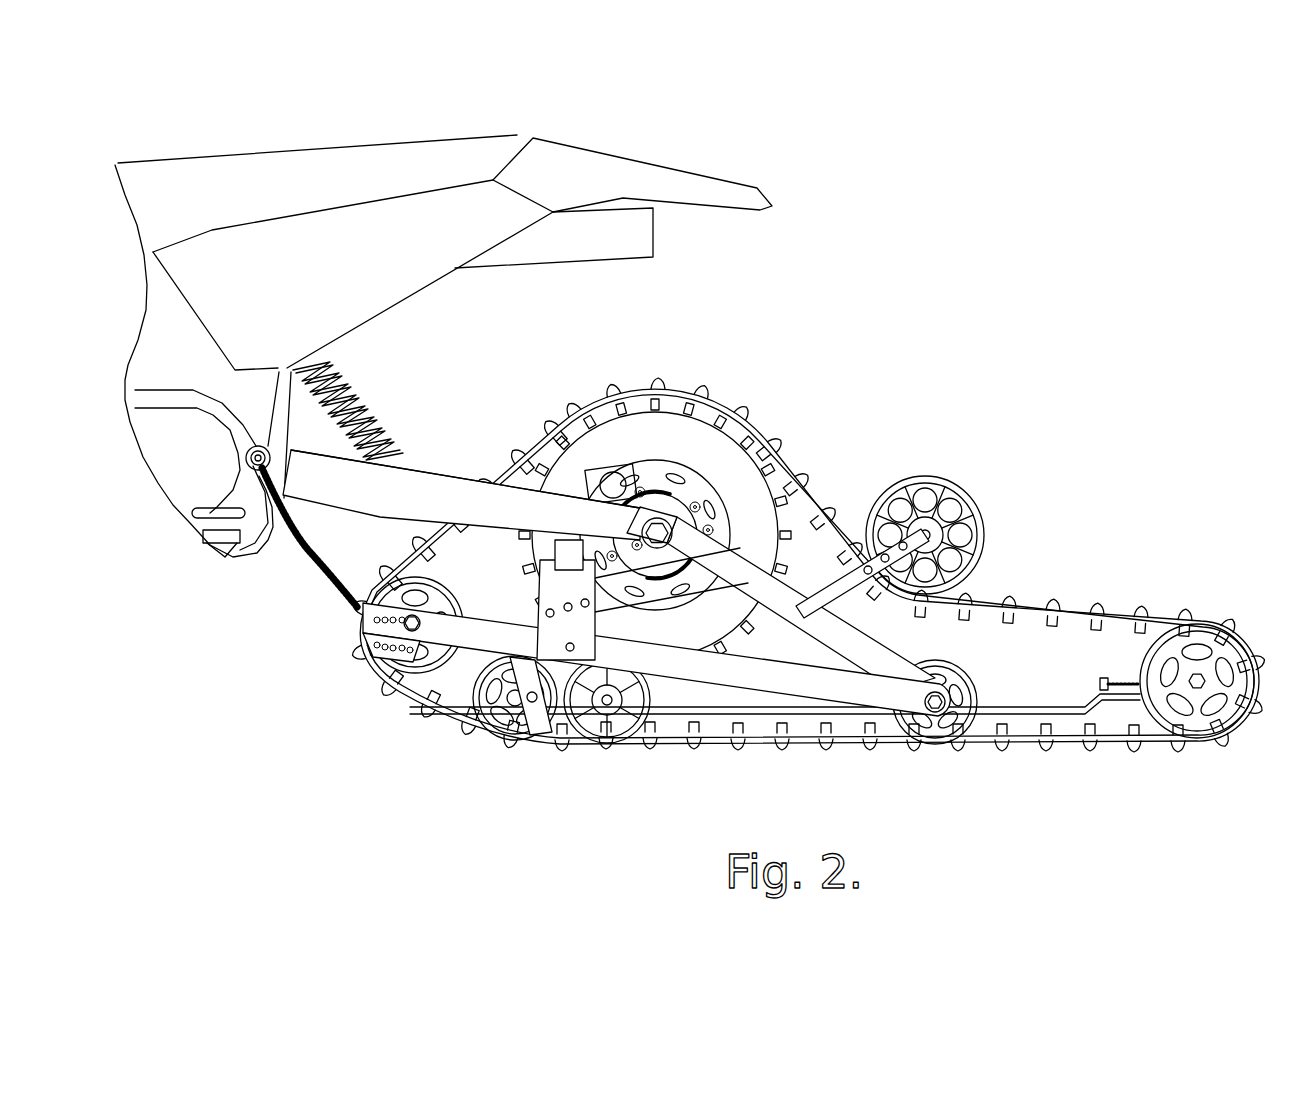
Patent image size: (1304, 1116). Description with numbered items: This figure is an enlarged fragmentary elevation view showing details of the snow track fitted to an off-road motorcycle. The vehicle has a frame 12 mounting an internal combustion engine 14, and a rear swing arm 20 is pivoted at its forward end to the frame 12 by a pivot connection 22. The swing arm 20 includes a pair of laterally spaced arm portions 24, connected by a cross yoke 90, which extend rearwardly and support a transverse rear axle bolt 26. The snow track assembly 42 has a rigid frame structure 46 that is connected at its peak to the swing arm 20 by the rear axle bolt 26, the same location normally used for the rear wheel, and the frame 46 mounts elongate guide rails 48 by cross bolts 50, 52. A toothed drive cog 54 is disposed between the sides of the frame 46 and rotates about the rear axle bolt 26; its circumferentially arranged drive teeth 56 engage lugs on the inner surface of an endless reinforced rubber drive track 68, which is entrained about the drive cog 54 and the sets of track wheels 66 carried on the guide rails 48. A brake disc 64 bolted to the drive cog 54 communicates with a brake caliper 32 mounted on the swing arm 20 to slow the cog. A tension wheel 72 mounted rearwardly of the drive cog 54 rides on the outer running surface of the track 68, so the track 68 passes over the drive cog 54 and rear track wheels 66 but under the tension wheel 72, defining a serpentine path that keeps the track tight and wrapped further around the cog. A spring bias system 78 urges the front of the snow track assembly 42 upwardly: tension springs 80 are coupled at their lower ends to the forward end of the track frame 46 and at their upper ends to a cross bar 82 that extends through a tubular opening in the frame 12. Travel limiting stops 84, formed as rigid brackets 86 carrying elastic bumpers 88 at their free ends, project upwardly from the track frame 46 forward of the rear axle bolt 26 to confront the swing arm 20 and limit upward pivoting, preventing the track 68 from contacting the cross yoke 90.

The frame 12 is at (280, 493).
The internal combustion engine 14 is at (443, 392).
The rear swing arm 20 is at (609, 546).
The pivot connection 22 is at (416, 328).
The arm portions 24 is at (465, 507).
The rear axle bolt 26 is at (825, 542).
The brake caliper 32 is at (644, 427).
The snow track assembly 42 is at (924, 845).
The frame structure 46 is at (656, 670).
The guide rails 48 is at (775, 735).
The cross bolt 50 is at (346, 671).
The cross bolt 52 is at (896, 742).
The drive cog 54 is at (655, 510).
The drive teeth 56 is at (655, 510).
The brake disc 64 is at (703, 511).
The track wheels 66 is at (822, 698).
The drive track 68 is at (808, 565).
The tension wheel 72 is at (928, 519).
The spring bias system 78 is at (311, 657).
The tension springs 80 is at (310, 558).
The cross bar 82 is at (392, 392).
The travel limiting stops 84 is at (508, 490).
The brackets 86 is at (511, 723).
The bumpers 88 is at (549, 674).
The cross yoke 90 is at (433, 417).